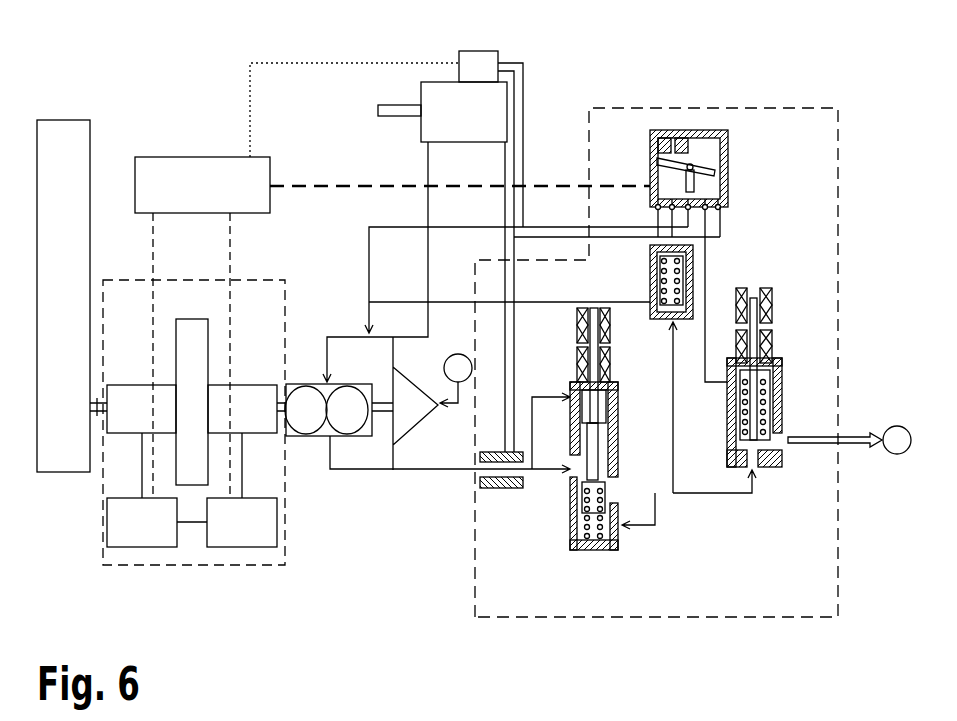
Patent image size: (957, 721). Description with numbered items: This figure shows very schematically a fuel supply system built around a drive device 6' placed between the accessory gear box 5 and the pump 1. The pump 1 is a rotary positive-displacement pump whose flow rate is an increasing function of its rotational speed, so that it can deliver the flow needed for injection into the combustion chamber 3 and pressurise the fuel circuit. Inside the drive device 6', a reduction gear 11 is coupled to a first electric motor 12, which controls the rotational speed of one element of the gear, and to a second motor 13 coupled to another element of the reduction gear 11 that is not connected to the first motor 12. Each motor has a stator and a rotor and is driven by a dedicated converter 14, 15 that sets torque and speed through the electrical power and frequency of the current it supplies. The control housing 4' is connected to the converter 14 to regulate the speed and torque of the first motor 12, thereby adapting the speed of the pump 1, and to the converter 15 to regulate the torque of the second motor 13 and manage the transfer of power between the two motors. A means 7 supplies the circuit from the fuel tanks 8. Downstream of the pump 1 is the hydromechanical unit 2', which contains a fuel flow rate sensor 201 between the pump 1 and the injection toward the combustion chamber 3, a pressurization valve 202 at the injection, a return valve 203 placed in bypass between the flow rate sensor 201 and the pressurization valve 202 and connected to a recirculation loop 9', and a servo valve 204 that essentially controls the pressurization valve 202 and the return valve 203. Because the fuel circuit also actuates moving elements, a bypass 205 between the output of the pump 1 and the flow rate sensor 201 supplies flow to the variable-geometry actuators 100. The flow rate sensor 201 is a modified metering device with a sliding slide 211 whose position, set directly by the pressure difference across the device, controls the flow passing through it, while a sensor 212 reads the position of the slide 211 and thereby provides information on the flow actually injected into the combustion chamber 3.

The accessory gear box 5 is at (70, 148).
The control housing 4' is at (202, 294).
The reduction gear 11 is at (188, 326).
The first electric motor 12 is at (122, 400).
The second motor 13 is at (250, 395).
The converter 14 is at (130, 523).
The converter 15 is at (240, 523).
The drive device 6' is at (194, 474).
The pump 1 is at (305, 440).
The means for supplying the circuit 7 is at (395, 445).
The fuel tanks 8 is at (456, 380).
The recirculation loop 9' is at (505, 262).
The actuators 100 is at (440, 100).
The hydromechanical unit 2' is at (640, 389).
The bypass 205 is at (510, 488).
The servo valve 204 is at (705, 130).
The return valve 203 is at (693, 263).
The sensor 212 is at (595, 340).
The slide 211 is at (592, 456).
The fuel flow rate sensor 201 is at (570, 533).
The pressurization valve 202 is at (783, 460).
The combustion chamber 3 is at (849, 440).